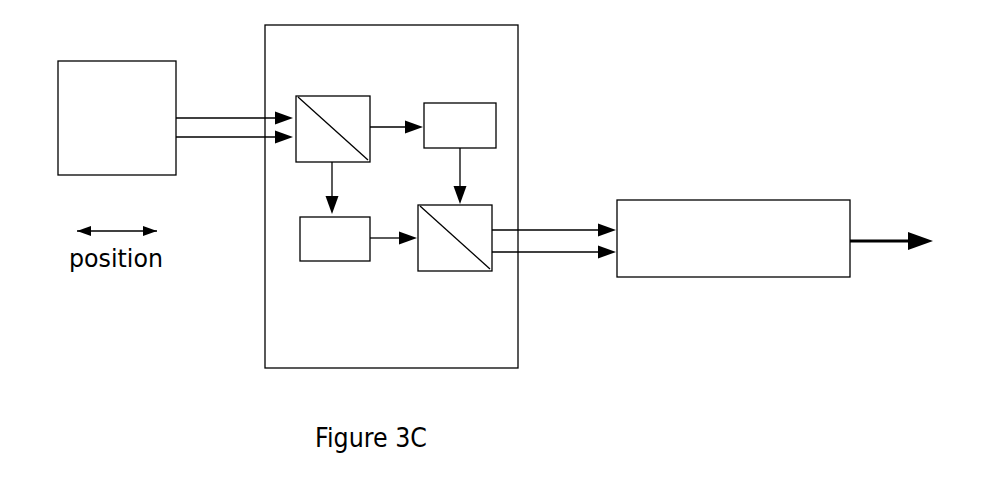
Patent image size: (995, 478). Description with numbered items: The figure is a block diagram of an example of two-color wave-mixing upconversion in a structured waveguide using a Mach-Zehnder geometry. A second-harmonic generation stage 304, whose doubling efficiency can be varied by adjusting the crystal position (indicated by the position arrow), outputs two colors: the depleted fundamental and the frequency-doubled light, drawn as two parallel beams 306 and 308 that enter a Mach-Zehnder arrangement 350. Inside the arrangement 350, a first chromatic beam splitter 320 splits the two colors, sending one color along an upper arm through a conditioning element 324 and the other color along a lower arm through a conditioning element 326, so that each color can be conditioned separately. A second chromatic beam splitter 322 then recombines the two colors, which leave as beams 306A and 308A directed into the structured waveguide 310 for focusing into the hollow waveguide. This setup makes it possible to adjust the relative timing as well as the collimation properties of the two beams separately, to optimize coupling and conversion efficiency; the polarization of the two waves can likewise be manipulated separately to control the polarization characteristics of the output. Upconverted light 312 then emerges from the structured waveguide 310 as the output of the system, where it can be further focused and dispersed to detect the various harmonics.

The second harmonic generator (SHG) 304 is at (117, 118).
The first light beam 306 is at (234, 108).
The second light beam 308 is at (234, 150).
The first beam splitter 320 is at (333, 110).
The second beam splitter 322 is at (455, 258).
The first optical element 324 is at (460, 103).
The second optical element 326 is at (335, 259).
The optical assembly 350 is at (391, 196).
The first output light beam 306A is at (554, 218).
The second output light beam 308A is at (554, 274).
The structured waveguide 310 is at (733, 238).
The light emerging from structured waveguide 312 is at (891, 228).